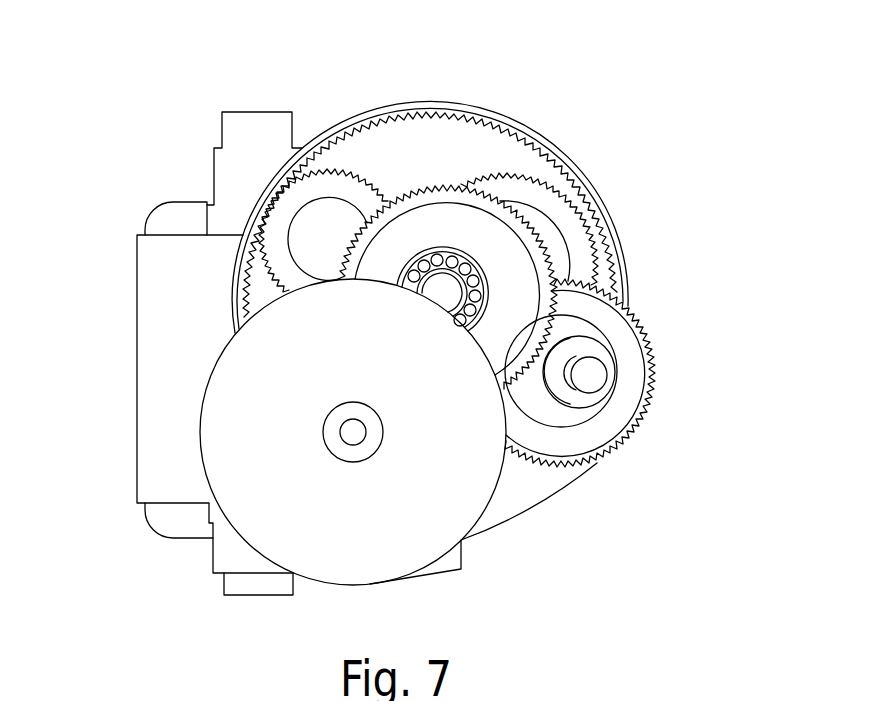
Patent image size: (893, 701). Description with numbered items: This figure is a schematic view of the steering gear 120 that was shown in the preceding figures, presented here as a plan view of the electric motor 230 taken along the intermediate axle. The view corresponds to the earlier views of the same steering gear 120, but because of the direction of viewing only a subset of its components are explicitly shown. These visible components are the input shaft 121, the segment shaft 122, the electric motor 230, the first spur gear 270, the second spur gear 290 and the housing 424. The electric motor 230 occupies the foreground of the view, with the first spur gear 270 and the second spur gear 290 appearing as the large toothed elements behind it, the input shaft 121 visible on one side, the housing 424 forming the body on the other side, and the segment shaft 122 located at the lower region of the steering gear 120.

The steering gear 120 is at (146, 87).
The input shaft 121 is at (593, 370).
The segment shaft 122 is at (462, 569).
The electric motor 230 is at (199, 408).
The first spur gear 270 is at (371, 85).
The second spur gear 290 is at (371, 85).
The housing 424 is at (170, 312).